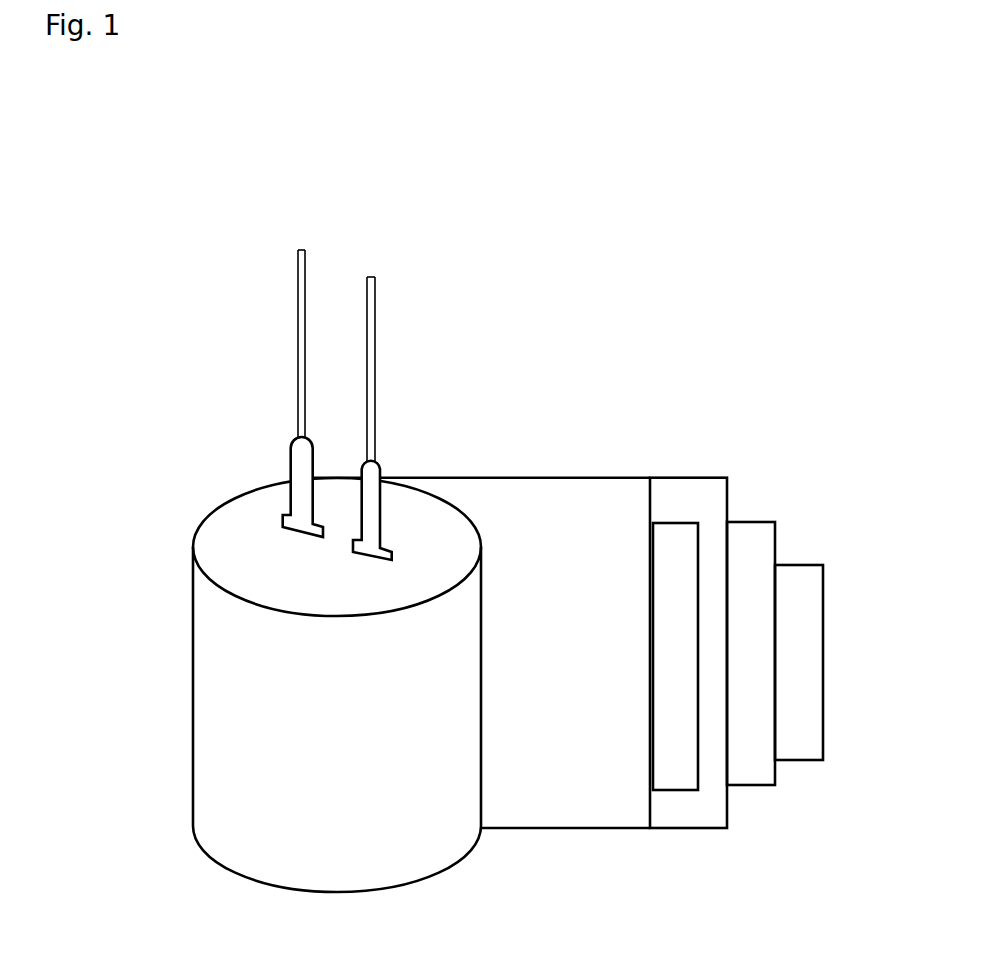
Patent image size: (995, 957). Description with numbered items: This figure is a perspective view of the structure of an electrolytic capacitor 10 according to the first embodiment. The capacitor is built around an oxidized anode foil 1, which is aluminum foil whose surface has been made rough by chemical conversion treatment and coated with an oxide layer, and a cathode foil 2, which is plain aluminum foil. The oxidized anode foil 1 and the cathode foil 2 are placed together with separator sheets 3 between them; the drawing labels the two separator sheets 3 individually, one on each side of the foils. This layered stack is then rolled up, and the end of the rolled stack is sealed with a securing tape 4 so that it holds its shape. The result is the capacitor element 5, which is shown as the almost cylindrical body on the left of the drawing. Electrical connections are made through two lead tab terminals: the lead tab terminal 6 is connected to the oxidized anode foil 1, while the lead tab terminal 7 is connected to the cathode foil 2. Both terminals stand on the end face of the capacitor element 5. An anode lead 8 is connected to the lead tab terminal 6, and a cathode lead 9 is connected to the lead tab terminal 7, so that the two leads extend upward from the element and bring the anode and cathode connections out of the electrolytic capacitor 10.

The oxidized anode foil 1 is at (672, 525).
The cathode foil 2 is at (744, 527).
The separator sheets 3 is at (708, 495).
The securing tape 4 is at (810, 653).
The capacitor element 5 is at (213, 707).
The lead tab terminal 6 is at (298, 465).
The lead tab terminal 7 is at (372, 476).
The anode lead 8 is at (300, 250).
The cathode lead 9 is at (368, 277).
The electrolytic capacitor 10 is at (538, 143).